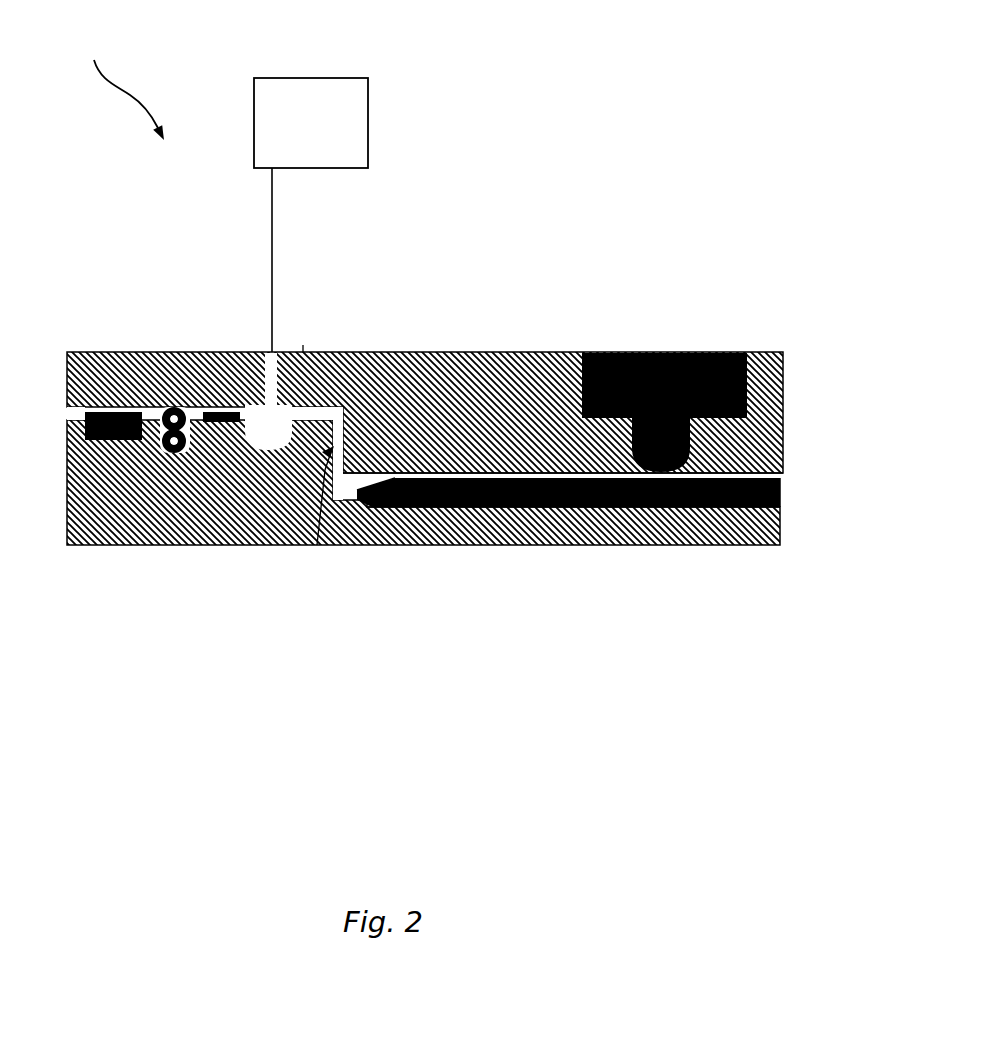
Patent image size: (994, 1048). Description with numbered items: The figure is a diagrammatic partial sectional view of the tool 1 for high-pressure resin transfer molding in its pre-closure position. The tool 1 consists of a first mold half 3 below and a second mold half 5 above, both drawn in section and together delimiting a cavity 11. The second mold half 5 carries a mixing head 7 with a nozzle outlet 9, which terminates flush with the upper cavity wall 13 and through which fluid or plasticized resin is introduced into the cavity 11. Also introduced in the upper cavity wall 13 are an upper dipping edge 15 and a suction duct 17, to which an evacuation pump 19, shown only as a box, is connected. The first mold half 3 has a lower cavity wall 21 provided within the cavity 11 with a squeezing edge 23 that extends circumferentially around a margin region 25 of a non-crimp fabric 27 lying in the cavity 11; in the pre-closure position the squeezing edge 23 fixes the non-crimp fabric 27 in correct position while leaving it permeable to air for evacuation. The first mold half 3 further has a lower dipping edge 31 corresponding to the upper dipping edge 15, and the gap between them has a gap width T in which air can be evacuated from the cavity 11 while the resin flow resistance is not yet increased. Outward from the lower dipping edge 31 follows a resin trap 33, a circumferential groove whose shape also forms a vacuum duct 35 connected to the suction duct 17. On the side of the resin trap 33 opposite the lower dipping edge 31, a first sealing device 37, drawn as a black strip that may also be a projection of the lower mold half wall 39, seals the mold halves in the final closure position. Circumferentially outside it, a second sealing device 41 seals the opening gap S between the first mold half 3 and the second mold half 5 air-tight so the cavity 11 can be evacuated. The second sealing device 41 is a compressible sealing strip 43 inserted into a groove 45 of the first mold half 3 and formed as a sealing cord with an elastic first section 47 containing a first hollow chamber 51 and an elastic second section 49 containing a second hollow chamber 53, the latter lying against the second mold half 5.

The tool 1 is at (125, 78).
The first mold half 3 is at (237, 500).
The second mold half 5 is at (460, 385).
The mixing head 7 is at (663, 352).
The nozzle outlet 9 is at (735, 352).
The cavity 11 is at (518, 477).
The upper cavity wall 13 is at (775, 505).
The upper dipping edge 15 is at (333, 400).
The suction duct 17 is at (272, 296).
The evacuation pump 19 is at (320, 92).
The lower cavity wall 21 is at (755, 473).
The squeezing edge 23 is at (378, 503).
The margin region 25 is at (385, 472).
The non-crimp fabric 27 is at (630, 500).
The lower dipping edge 31 is at (352, 443).
The resin trap 33 is at (276, 452).
The vacuum duct 35 is at (268, 427).
The first sealing device 37 is at (240, 405).
The lower mold half wall 39 is at (72, 402).
The second sealing device 41 is at (200, 400).
The sealing strip 43 is at (174, 419).
The groove 45 is at (190, 450).
The first section 47 is at (165, 450).
The second section 49 is at (158, 392).
The first hollow chamber 51 is at (174, 441).
The second hollow chamber 53 is at (113, 426).
The opening gap S is at (305, 333).
The gap width T is at (317, 545).